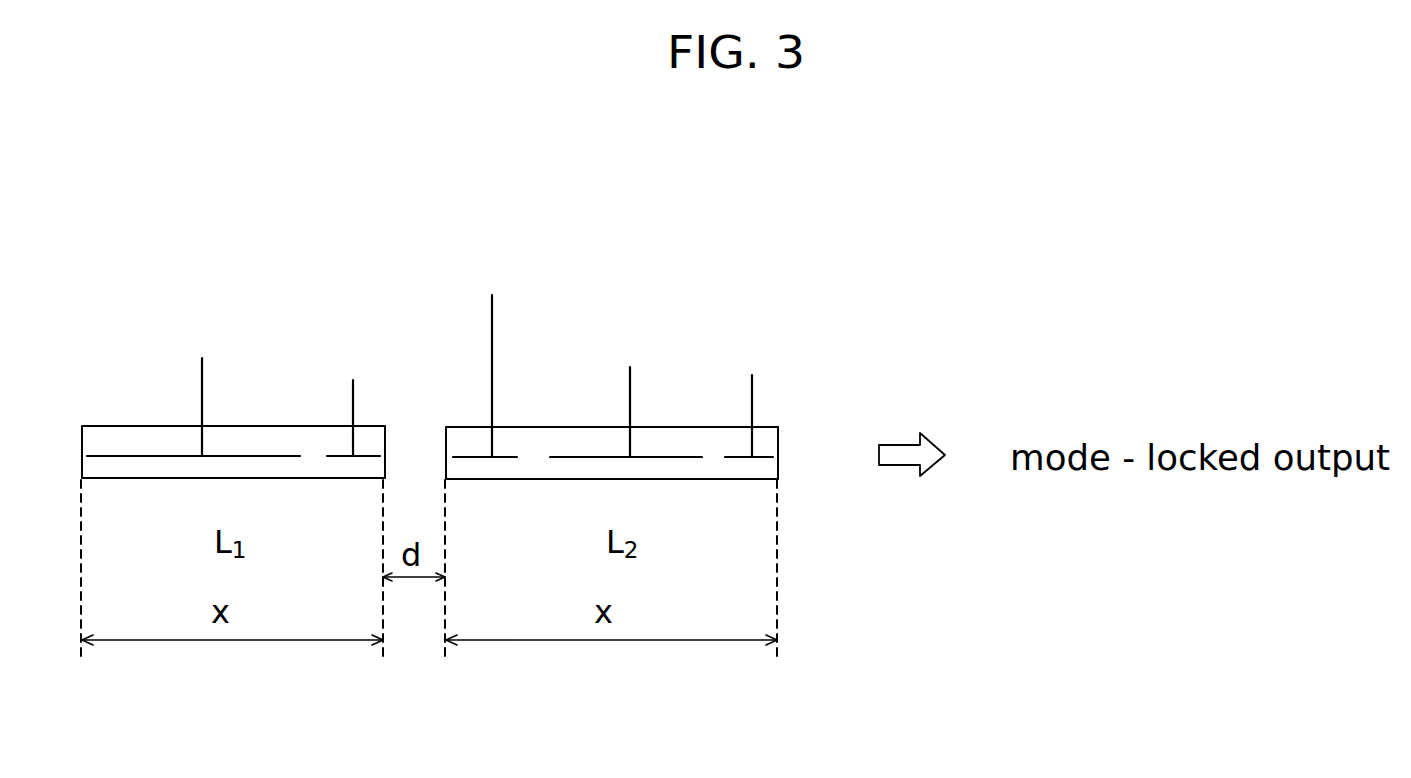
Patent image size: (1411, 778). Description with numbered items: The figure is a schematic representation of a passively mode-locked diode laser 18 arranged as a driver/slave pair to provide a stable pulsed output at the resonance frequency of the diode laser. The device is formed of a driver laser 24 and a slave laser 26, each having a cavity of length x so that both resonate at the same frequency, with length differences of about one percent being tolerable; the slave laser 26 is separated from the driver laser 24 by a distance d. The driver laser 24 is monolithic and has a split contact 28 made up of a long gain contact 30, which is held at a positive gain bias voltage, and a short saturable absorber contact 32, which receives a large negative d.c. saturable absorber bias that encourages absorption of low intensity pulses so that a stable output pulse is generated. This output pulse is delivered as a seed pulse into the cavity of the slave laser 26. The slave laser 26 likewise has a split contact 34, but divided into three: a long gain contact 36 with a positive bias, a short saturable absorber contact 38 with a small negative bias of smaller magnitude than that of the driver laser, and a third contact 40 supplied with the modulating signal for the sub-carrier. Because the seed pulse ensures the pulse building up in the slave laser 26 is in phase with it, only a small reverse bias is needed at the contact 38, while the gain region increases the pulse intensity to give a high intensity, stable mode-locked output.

The passively mode-locked diode laser 18 is at (340, 267).
The driver laser 24 is at (113, 425).
The slave laser 26 is at (778, 470).
The split contact 28 is at (307, 468).
The gain contact 30 is at (253, 456).
The saturable absorber contact 32 is at (372, 456).
The split contact 34 is at (578, 432).
The gain contact 36 is at (657, 457).
The saturable absorber contact 38 is at (762, 457).
The third contact 40 is at (502, 457).